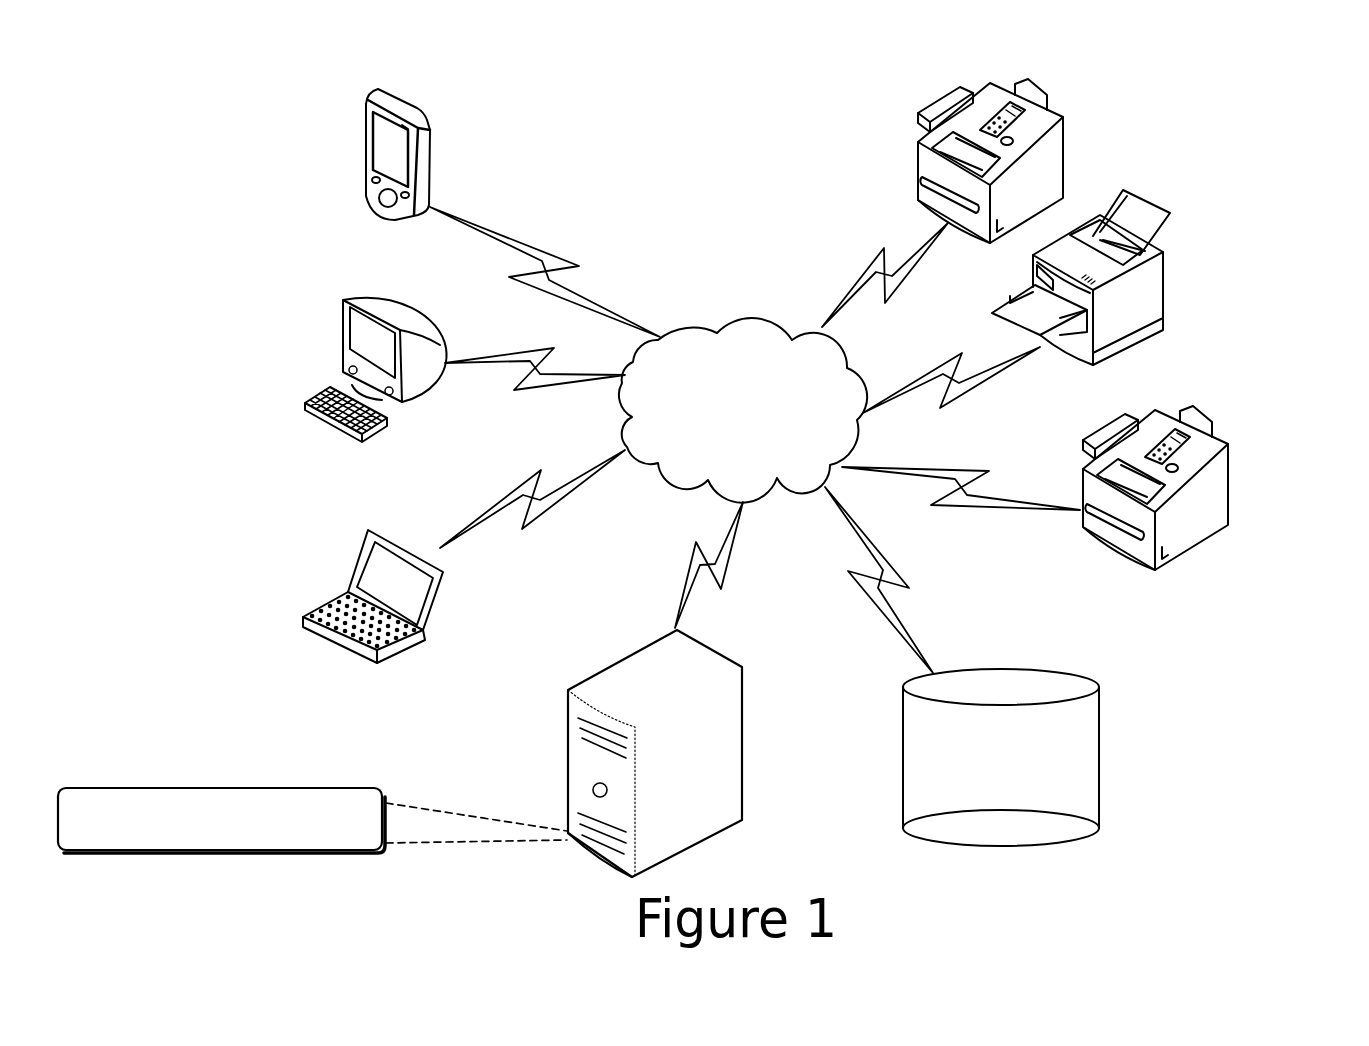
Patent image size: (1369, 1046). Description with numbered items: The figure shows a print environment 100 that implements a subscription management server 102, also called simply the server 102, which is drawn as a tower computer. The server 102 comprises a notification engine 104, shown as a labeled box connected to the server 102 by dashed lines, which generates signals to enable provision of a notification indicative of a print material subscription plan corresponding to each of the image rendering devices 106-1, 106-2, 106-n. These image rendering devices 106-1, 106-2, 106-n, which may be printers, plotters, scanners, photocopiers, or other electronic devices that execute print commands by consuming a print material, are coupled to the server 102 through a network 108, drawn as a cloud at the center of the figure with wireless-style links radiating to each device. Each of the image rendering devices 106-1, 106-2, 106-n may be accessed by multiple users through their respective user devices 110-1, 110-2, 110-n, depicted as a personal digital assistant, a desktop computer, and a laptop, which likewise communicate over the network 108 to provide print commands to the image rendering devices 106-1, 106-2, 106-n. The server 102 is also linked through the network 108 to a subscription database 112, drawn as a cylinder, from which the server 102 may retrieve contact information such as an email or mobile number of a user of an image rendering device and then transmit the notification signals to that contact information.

The print environment 100 is at (232, 78).
The subscription management server 102 is at (565, 766).
The notification engine 104 is at (312, 820).
The image rendering device 106-1 is at (1063, 125).
The image rendering device 106-2 is at (1160, 255).
The image rendering device 106-n is at (1228, 455).
The network 108 is at (743, 410).
The user device 110-1 is at (364, 148).
The user device 110-2 is at (308, 390).
The user device 110-n is at (305, 598).
The subscription database 112 is at (1001, 757).